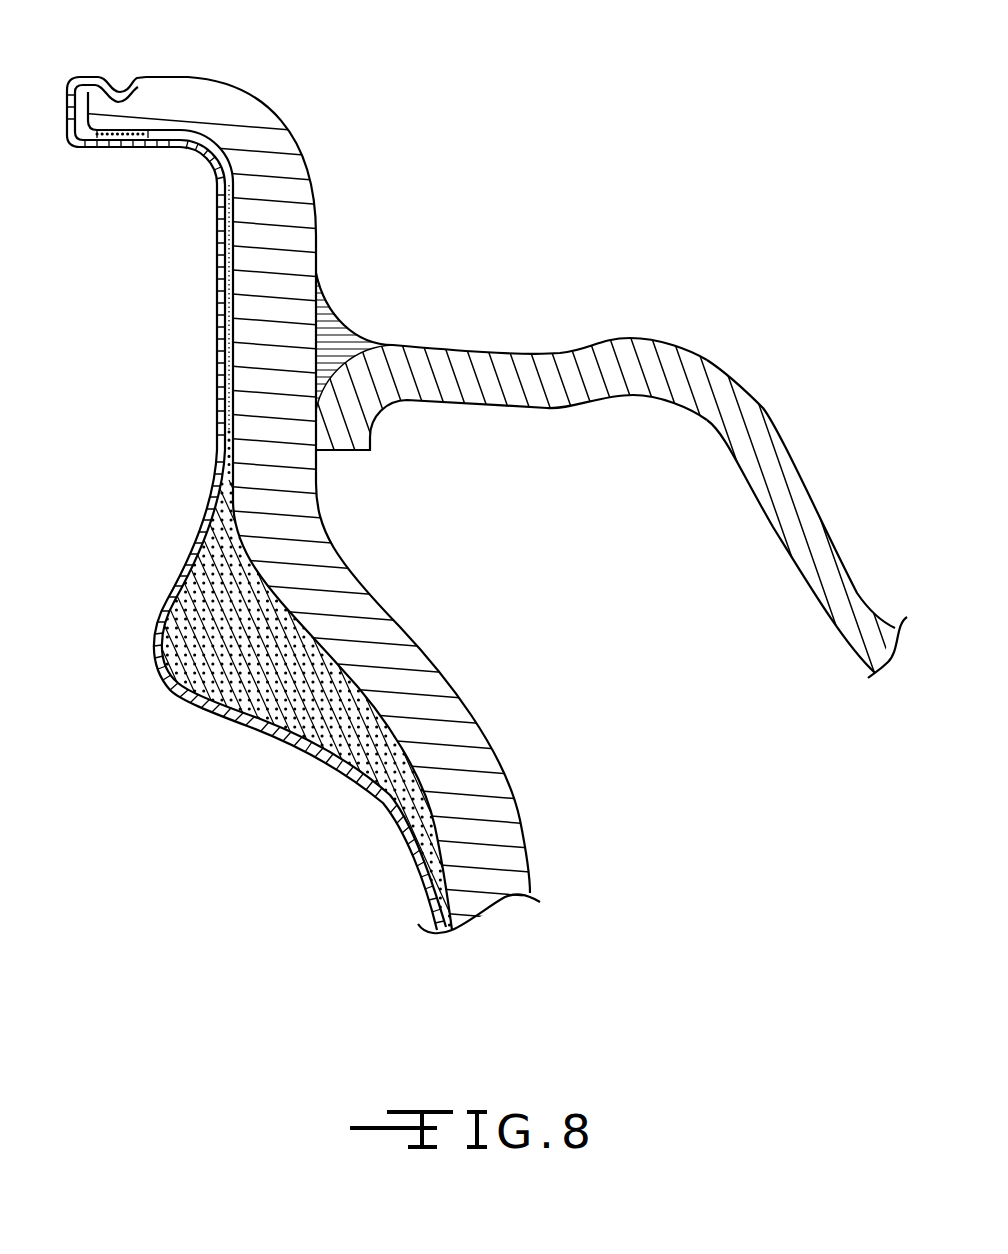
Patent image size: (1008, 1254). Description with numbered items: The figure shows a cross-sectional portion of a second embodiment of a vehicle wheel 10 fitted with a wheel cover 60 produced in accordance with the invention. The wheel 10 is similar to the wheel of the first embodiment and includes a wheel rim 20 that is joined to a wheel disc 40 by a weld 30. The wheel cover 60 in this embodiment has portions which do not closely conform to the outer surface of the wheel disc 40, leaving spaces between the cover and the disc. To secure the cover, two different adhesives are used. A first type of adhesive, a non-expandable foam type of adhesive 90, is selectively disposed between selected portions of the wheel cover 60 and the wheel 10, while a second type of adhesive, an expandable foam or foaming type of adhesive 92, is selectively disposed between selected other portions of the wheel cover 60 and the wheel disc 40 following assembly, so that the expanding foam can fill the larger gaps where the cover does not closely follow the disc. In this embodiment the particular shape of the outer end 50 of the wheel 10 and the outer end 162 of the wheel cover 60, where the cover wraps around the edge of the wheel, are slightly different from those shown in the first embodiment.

The wheel 10 is at (580, 281).
The wheel rim 20 is at (773, 406).
The weld 30 is at (347, 318).
The wheel disc 40 is at (511, 632).
The outer end of the wheel 50 is at (80, 115).
The wheel cover 60 is at (218, 732).
The non-expandable foam type adhesive 90 is at (118, 135).
The expandable foam type adhesive 92 is at (290, 710).
The outer end of the wheel cover 162 is at (73, 90).